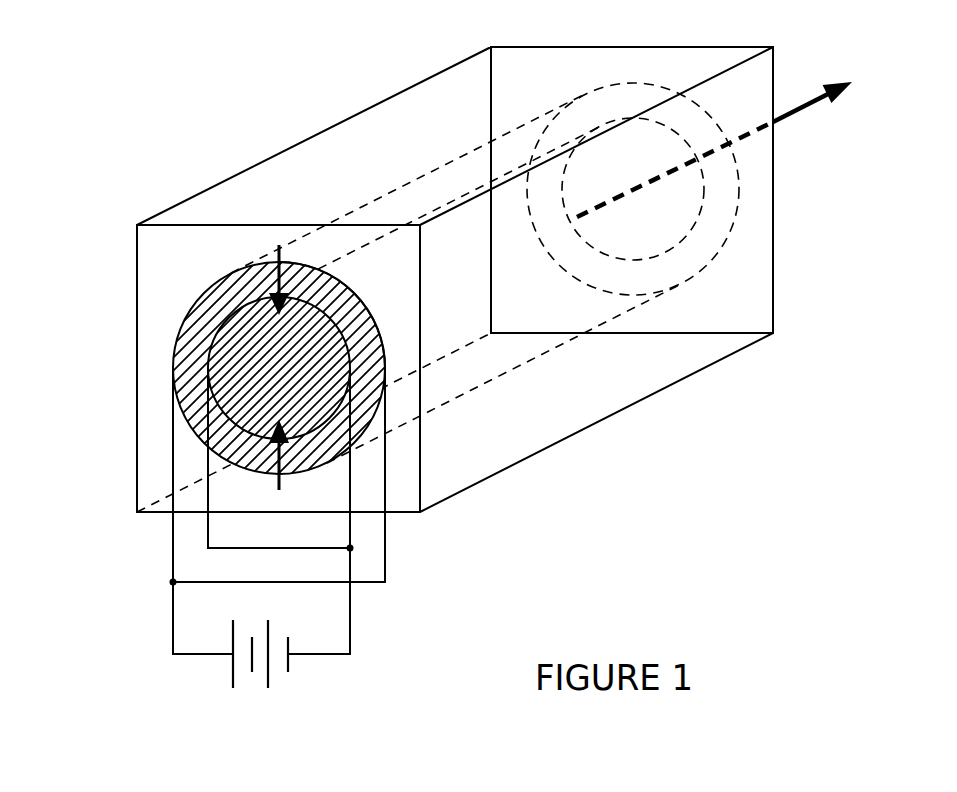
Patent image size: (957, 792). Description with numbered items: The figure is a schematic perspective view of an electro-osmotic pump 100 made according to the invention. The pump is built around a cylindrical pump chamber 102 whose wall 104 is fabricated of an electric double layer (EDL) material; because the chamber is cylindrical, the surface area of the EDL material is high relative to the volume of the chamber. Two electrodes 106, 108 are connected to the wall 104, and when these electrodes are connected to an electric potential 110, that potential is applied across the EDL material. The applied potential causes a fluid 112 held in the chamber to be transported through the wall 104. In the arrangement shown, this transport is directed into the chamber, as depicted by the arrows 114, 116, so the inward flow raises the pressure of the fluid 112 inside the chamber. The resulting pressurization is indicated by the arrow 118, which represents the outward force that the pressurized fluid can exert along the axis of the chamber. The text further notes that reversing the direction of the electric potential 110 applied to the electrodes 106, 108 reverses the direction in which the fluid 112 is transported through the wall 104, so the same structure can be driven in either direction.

The electro-osmotic pump 100 is at (440, 369).
The cylindrical pump chamber 102 is at (472, 310).
The wall 104 is at (198, 307).
The electrode 106 is at (173, 463).
The electrode 108 is at (353, 488).
The electric potential 110 is at (233, 682).
The fluid 112 is at (228, 369).
The arrow 114 is at (312, 268).
The arrow 116 is at (268, 478).
The arrow 118 is at (807, 108).